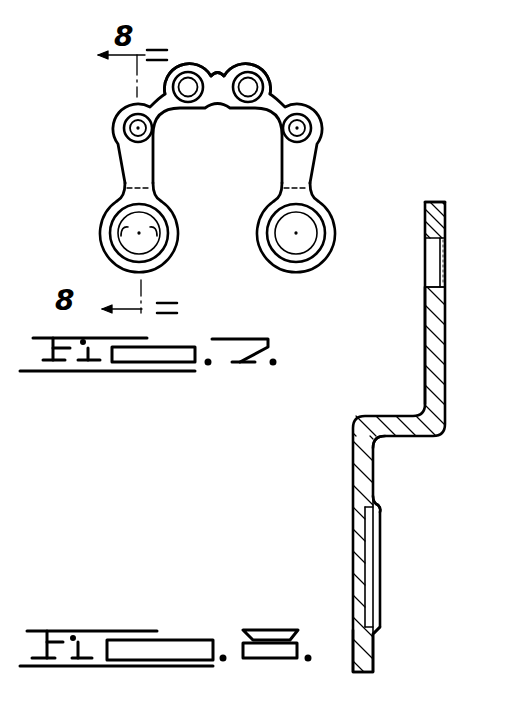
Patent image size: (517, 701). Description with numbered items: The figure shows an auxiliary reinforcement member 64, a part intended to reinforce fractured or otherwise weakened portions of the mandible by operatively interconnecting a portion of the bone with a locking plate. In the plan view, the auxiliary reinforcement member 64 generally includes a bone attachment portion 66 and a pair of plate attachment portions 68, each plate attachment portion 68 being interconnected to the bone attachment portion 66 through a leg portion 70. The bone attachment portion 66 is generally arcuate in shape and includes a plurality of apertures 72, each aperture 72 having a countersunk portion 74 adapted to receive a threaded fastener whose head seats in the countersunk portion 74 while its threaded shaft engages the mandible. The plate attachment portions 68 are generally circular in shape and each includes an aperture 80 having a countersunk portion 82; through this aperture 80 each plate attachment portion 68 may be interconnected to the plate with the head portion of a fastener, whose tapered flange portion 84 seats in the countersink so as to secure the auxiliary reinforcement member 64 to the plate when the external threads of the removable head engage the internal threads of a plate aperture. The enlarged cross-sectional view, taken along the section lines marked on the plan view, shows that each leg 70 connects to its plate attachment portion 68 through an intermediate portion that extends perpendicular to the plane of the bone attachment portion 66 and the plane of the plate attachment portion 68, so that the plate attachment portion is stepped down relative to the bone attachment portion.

In FIG. 7, the auxiliary reinforcement member 64 is at (97, 117).
In FIG. 8, the auxiliary reinforcement member 64 is at (350, 420).
In FIG. 7, the bone attachment portion 66 is at (293, 102).
In FIG. 8, the bone attachment portion 66 is at (442, 201).
In FIG. 7, the plate attachment portion 68 is at (108, 207).
In FIG. 8, the plate attachment portion 68 is at (377, 657).
In FIG. 7, the leg portion 70 is at (155, 168).
In FIG. 8, the leg portion 70 is at (425, 336).
In FIG. 7, the aperture 72 is at (188, 86).
In FIG. 8, the aperture 72 is at (437, 284).
In FIG. 7, the countersunk portion 74 is at (249, 86).
In FIG. 8, the countersunk portion 74 is at (432, 236).
In FIG. 7, the aperture 80 is at (121, 231).
In FIG. 8, the aperture 80 is at (376, 512).
In FIG. 7, the countersunk portion 82 is at (152, 236).
In FIG. 8, the countersunk portion 82 is at (360, 503).
In FIG. 8, the tapered flange portion 84 is at (400, 438).